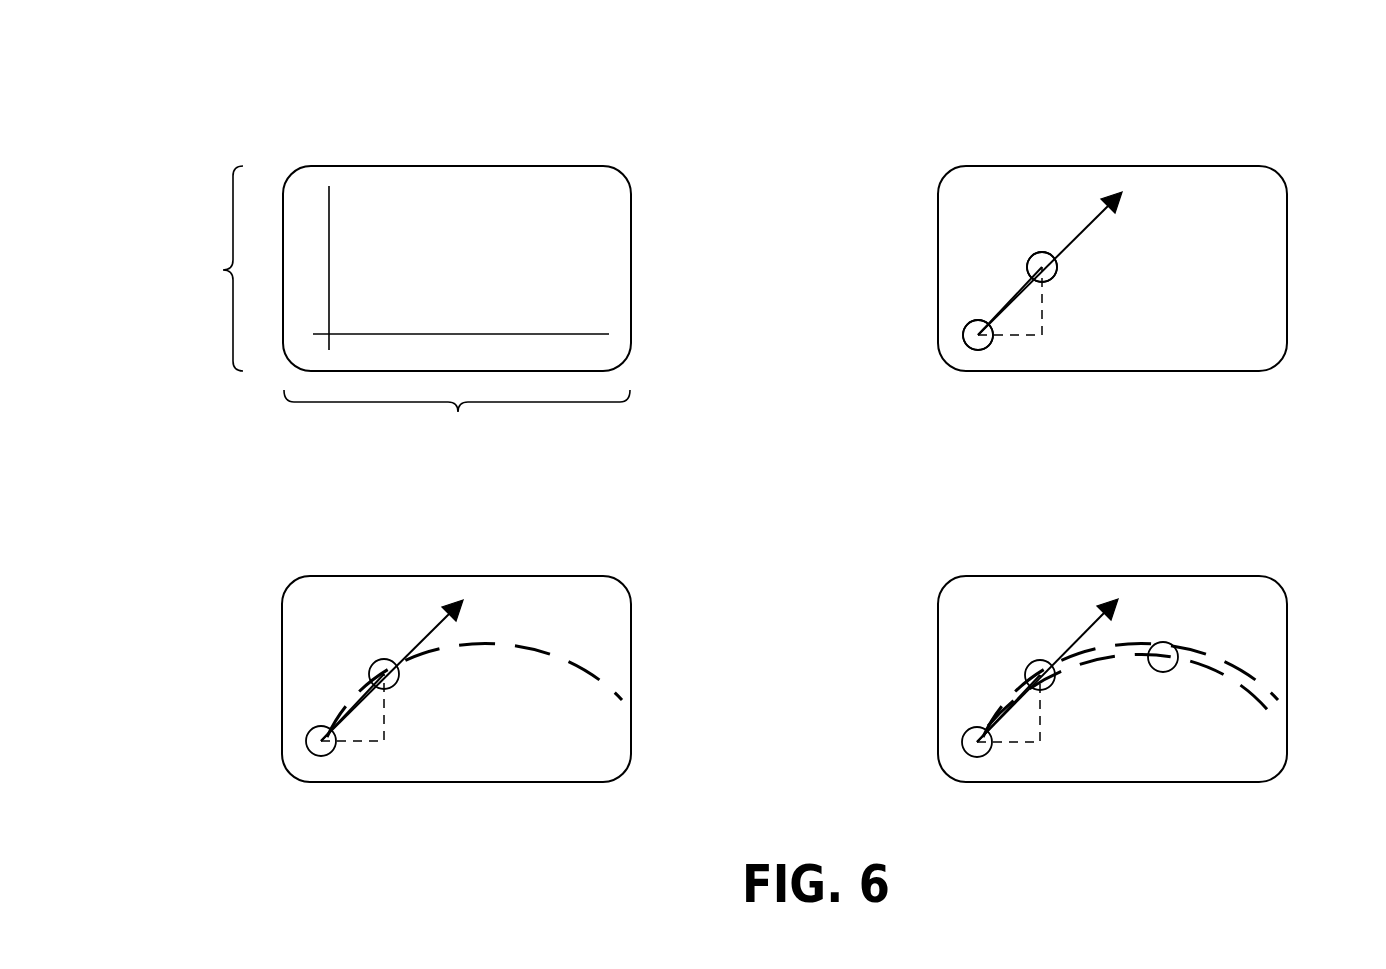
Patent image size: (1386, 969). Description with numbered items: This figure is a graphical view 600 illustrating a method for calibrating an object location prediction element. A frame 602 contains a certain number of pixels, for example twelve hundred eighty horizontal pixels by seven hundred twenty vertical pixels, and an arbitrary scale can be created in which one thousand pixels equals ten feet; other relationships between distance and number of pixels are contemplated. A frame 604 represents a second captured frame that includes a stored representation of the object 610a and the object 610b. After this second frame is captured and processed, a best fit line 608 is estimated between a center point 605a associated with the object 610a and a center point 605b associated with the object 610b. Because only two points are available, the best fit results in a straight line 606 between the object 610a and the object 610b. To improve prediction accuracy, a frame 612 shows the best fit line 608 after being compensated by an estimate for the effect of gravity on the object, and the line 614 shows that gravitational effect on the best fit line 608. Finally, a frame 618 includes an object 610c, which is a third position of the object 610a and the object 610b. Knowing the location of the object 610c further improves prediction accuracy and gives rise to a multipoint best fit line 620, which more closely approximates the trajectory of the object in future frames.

The gesture-based trajectory interface diagram 600 is at (210, 45).
The frame 602 is at (505, 166).
The frame 604 is at (1188, 166).
The center point 605a is at (962, 335).
The center point 605b is at (1040, 252).
The straight line 606 is at (1005, 302).
The best fit line 608 is at (1083, 223).
The object 610a is at (978, 350).
The object 610b is at (1057, 267).
The object 610c is at (1163, 672).
The frame 612 is at (579, 577).
The line 614 is at (495, 643).
The frame 618 is at (1235, 577).
The multipoint best fit line 620 is at (1252, 697).